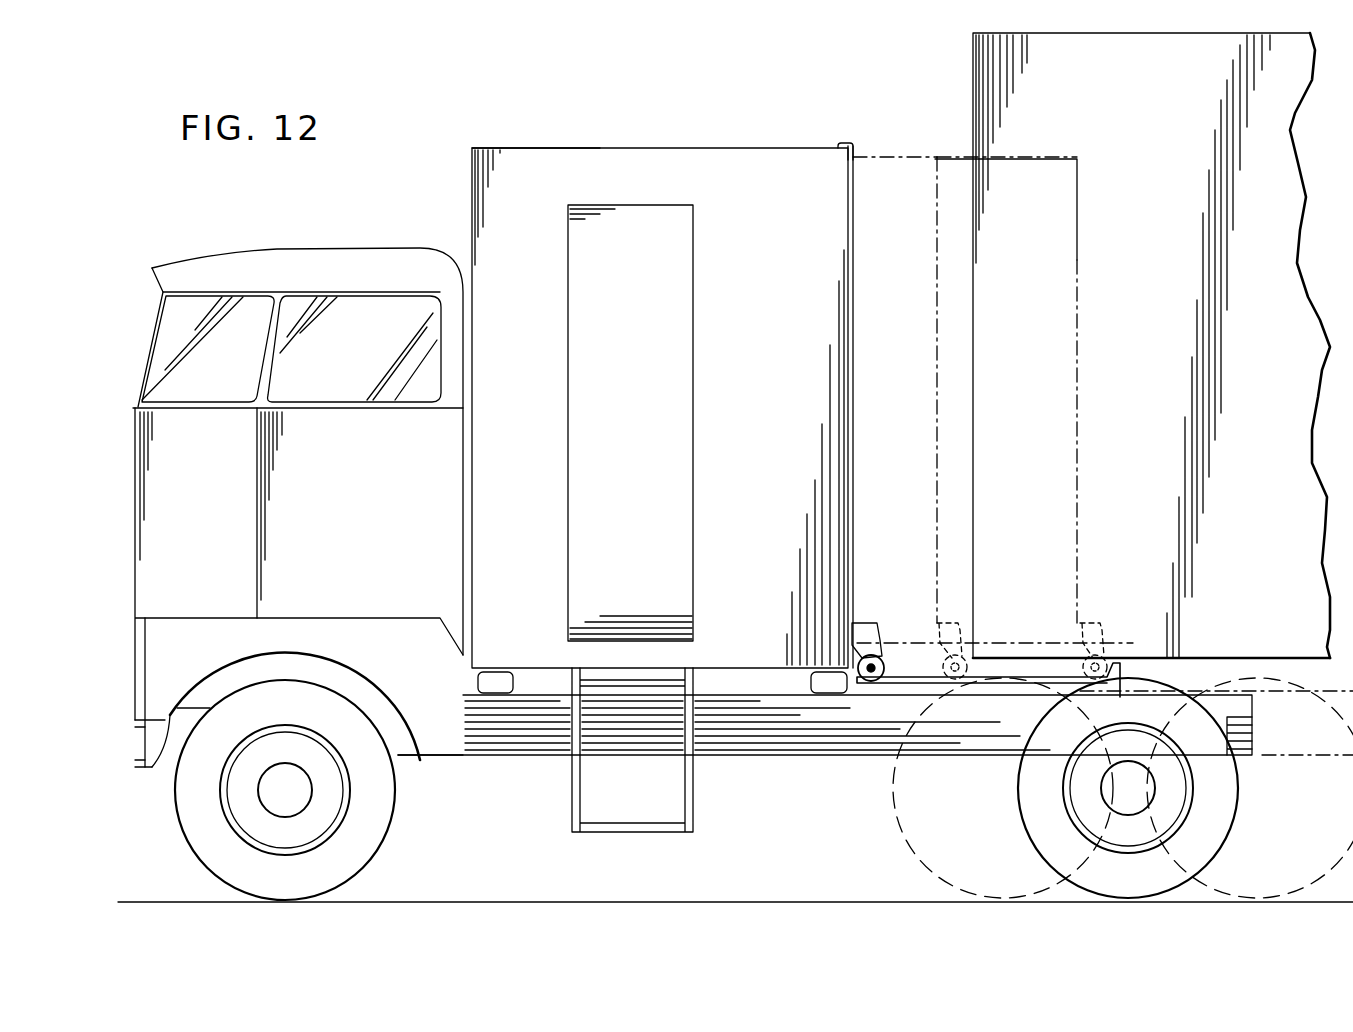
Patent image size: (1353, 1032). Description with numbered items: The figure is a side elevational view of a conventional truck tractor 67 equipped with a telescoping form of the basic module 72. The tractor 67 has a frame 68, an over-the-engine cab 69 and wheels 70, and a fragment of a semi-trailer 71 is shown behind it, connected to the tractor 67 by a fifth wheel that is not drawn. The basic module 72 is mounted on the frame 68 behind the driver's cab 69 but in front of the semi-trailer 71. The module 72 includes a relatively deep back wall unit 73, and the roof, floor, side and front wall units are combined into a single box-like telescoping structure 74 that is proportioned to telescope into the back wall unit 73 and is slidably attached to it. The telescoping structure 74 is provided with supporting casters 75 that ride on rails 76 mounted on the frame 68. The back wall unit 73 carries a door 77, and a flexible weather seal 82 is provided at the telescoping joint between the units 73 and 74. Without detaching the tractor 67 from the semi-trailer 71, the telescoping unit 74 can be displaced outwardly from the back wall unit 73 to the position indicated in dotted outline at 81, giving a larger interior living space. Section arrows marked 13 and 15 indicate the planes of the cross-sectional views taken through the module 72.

The section line 13- 13 is at (494, 92).
The section line 15- 15 is at (500, 43).
The truck tractor 67 is at (796, 776).
The frame 68 is at (726, 757).
The over-the-engine cab 69 is at (207, 256).
The wheels 70 is at (403, 800).
The semi-trailer 71 is at (973, 66).
The basic module 72 is at (638, 144).
The back wall unit 73 is at (523, 148).
The telescoping structure 74 is at (925, 152).
The supporting casters 75 is at (883, 652).
The rails 76 is at (877, 688).
The door 77 is at (612, 210).
The displaced position of telescoping unit 81 is at (935, 268).
The flexible weather seal 82 is at (853, 148).